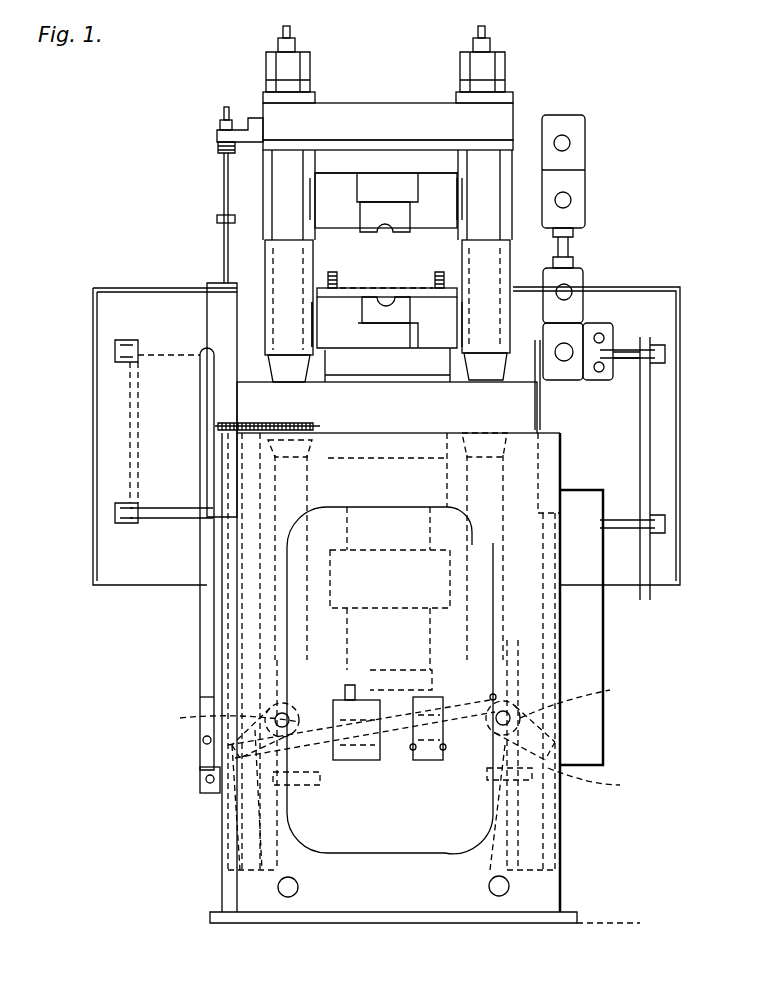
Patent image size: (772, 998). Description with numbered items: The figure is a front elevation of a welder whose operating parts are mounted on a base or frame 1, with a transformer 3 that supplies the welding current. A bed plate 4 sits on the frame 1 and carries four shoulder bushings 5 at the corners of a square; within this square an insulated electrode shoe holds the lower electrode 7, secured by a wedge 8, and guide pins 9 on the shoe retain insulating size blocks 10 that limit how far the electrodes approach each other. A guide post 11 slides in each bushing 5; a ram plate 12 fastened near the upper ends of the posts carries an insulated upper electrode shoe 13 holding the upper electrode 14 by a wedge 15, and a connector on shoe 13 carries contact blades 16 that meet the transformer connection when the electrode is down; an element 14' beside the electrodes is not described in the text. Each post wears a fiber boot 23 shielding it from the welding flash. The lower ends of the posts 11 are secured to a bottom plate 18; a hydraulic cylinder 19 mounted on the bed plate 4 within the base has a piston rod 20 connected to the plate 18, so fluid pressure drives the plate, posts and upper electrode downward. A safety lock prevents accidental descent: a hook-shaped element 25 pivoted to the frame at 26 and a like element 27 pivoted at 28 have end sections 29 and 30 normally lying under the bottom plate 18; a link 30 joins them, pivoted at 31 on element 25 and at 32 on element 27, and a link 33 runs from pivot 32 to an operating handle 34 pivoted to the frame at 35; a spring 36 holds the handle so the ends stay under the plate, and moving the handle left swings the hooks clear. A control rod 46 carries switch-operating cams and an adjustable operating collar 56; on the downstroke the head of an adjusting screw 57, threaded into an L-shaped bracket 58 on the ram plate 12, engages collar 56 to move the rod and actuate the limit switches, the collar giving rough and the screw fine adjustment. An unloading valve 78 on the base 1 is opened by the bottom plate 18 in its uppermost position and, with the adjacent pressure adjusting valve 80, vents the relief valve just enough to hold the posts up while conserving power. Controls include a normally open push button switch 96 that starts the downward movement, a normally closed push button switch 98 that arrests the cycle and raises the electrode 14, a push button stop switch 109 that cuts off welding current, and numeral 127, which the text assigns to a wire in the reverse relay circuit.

The base or frame 1 is at (540, 637).
The transformer 3 is at (645, 435).
The bed plate 4 is at (398, 407).
The shoulder bushings 5 is at (330, 375).
The contact blades 16 is at (387, 364).
The lower electrode 7 is at (370, 305).
The wedge 8 is at (418, 312).
The guide pins 9 is at (440, 272).
The size blocks 10 is at (368, 290).
The guide post 11 is at (275, 212).
The ram plate 12 is at (508, 112).
The electrode shoe 13 is at (310, 195).
The upper electrode 14 is at (367, 216).
The die side plate 14' is at (453, 324).
The wedge 15 is at (563, 200).
The bottom plate 18 is at (420, 810).
The hydraulic cylinder 19 is at (450, 588).
The piston rod 20 is at (405, 688).
The fiber boot 23 is at (265, 282).
The hook-shaped element 25 is at (598, 783).
The pivot 26 is at (612, 690).
The hook-shaped element 27 is at (225, 805).
The pivot 28 is at (275, 705).
The end section 29 is at (500, 820).
The link 30 is at (410, 760).
The pivot 31 is at (500, 700).
The pivot 32 is at (285, 762).
The link 33 is at (200, 718).
The operating handle 34 is at (205, 614).
The pivot 35 is at (205, 782).
The spring 36 is at (265, 424).
The control rod 46 is at (225, 165).
The operating collar 56 is at (217, 219).
The adjusting screw 57 is at (218, 147).
The L-shaped bracket 58 is at (218, 135).
The unloading valve 78 is at (456, 683).
The pressure adjusting valve 80 is at (345, 700).
The push button switch 96 is at (565, 143).
The push button switch 98 is at (565, 205).
The push button stop switch 109 is at (565, 292).
The wire 127 is at (566, 355).